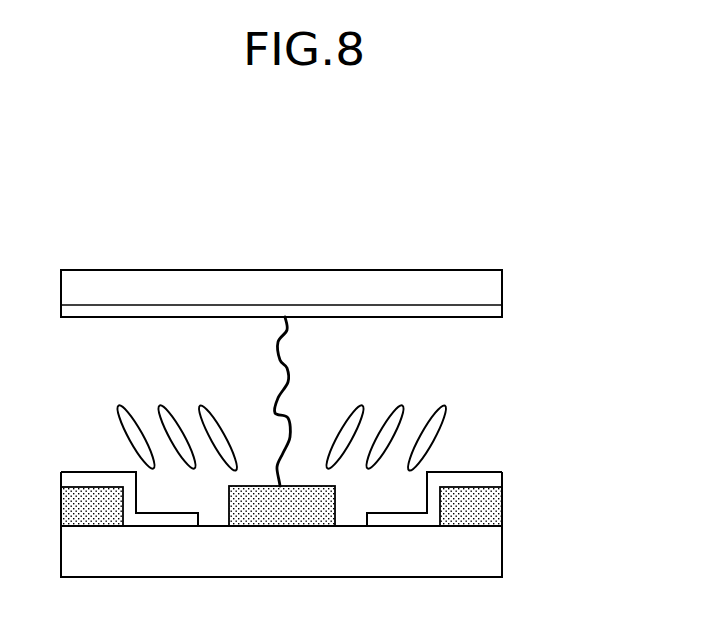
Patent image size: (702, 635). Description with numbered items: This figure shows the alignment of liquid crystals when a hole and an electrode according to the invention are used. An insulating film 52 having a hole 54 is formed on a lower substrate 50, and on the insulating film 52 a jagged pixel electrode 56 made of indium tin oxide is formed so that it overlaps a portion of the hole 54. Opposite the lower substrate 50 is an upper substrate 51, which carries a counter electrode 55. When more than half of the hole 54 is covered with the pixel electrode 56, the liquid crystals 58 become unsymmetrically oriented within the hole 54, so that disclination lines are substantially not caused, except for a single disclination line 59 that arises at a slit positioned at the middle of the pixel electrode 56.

The lower substrate 50 is at (492, 562).
The upper substrate 51 is at (490, 282).
The insulating film 52 is at (490, 513).
The hole 54 is at (398, 489).
The counter electrode 55 is at (490, 312).
The pixel electrode 56 is at (492, 478).
The liquid crystals 58 is at (438, 422).
The disclination line 59 is at (283, 360).